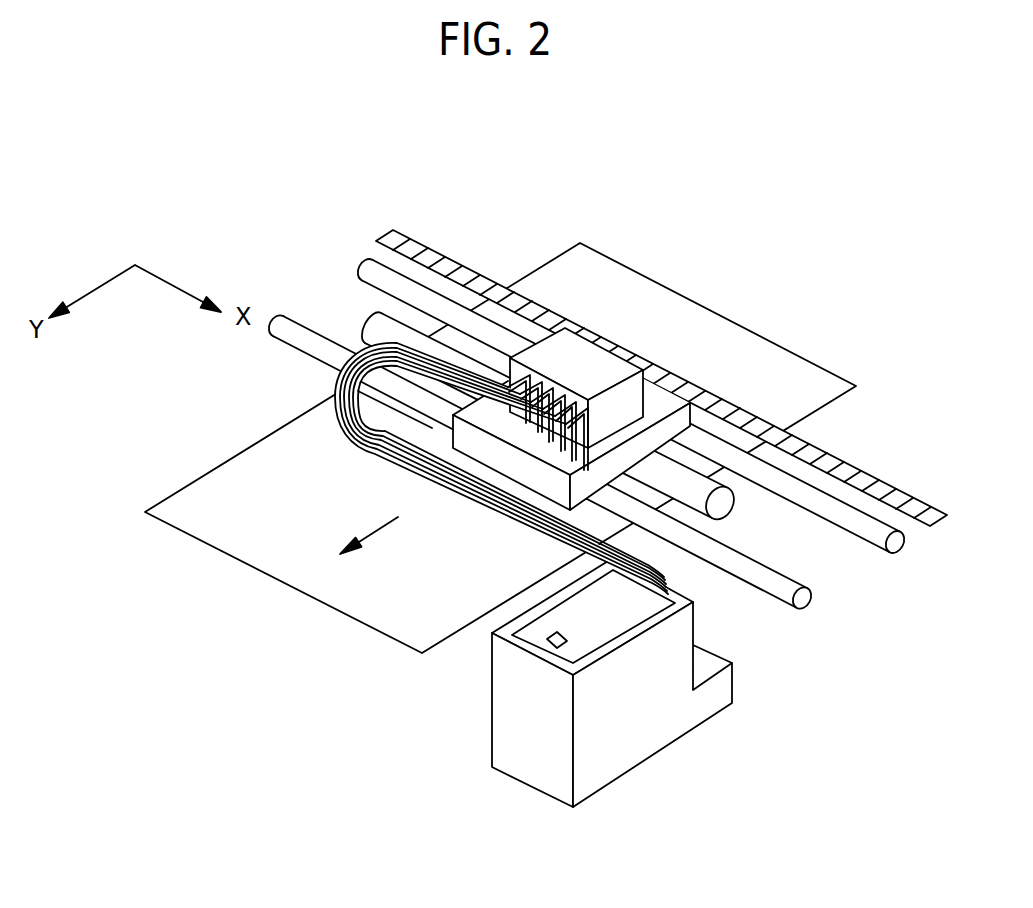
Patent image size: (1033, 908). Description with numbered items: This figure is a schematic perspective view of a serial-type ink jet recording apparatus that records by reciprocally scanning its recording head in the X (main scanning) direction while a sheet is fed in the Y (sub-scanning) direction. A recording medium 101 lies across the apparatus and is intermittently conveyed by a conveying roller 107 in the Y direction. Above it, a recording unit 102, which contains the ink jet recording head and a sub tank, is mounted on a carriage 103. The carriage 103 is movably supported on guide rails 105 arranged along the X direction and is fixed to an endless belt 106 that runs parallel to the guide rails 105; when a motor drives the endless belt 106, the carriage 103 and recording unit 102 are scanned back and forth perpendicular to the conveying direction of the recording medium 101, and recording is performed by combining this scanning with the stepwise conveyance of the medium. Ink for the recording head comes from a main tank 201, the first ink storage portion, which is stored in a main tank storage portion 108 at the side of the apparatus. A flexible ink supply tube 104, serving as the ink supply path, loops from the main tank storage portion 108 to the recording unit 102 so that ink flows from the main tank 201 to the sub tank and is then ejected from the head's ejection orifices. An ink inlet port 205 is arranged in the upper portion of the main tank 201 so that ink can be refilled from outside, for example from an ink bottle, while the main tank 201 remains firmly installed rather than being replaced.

The recording medium 101 is at (597, 268).
The recording unit 102 is at (583, 358).
The carriage 103 is at (663, 405).
The ink supply tube 104 is at (327, 425).
The guide rails 105 is at (380, 273).
The endless belt 106 is at (422, 252).
The conveying roller 107 is at (727, 501).
The main tank storage portion 108 is at (498, 658).
The main tank 201 is at (633, 607).
The ink inlet port 205 is at (562, 643).